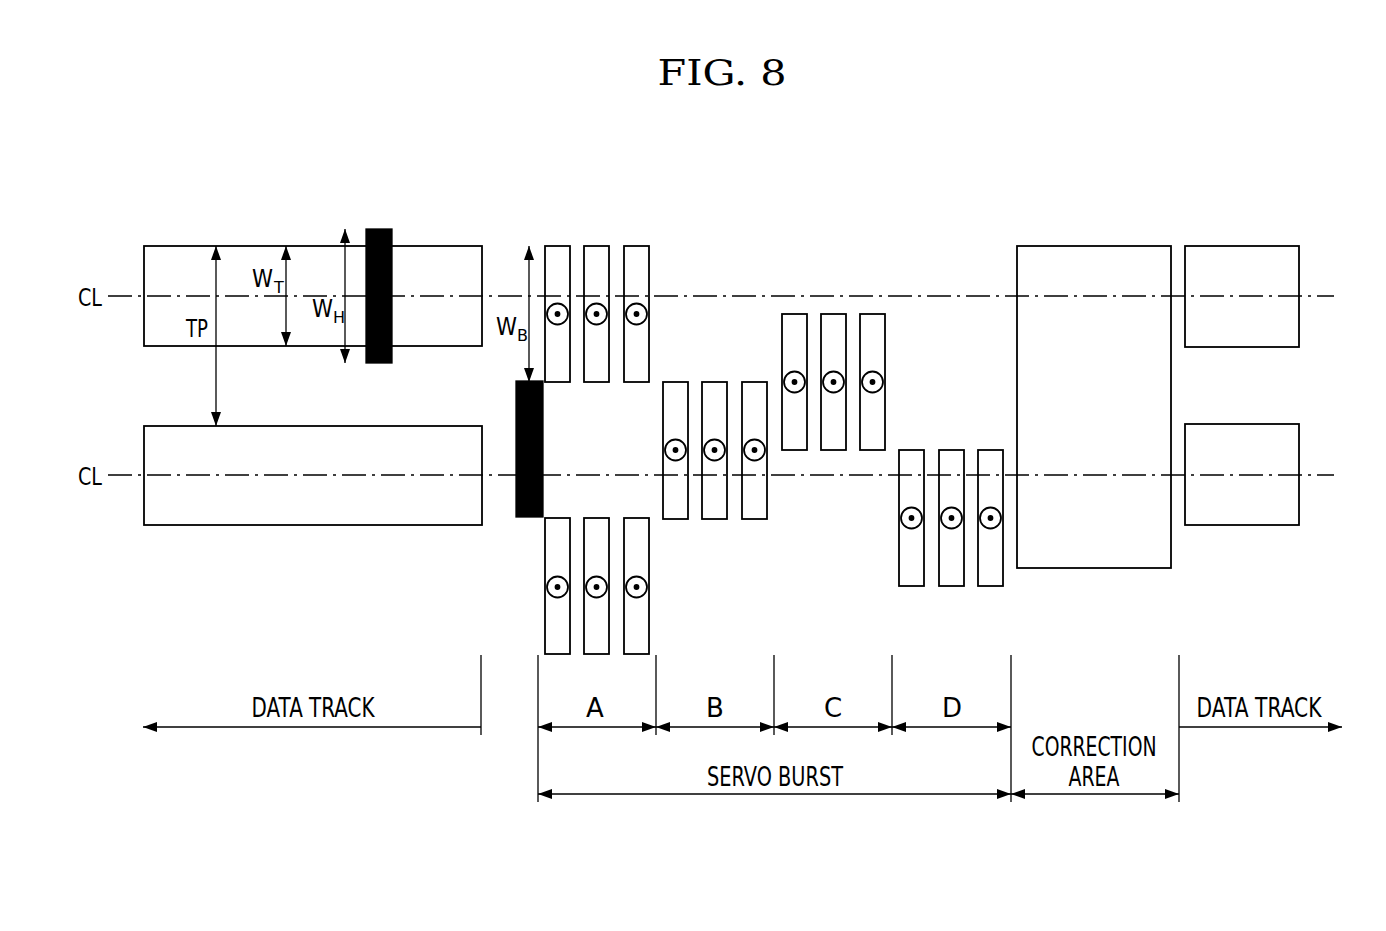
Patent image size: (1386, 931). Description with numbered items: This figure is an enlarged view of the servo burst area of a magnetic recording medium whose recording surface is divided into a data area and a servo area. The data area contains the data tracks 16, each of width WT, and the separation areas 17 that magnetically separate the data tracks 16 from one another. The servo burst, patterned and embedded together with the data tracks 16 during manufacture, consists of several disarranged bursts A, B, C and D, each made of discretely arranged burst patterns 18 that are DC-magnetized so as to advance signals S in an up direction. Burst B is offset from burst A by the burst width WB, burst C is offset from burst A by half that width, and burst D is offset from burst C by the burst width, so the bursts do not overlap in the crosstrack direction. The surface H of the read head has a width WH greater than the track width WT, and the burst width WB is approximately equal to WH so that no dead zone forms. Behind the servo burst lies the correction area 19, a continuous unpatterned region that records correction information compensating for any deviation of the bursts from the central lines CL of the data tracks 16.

The data track 16 is at (1290, 278).
The separation area 17 is at (1290, 383).
The burst pattern 18 is at (618, 281).
The correction area 19 is at (1089, 249).
The surface of the read head H is at (378, 228).
The signal S is at (641, 307).